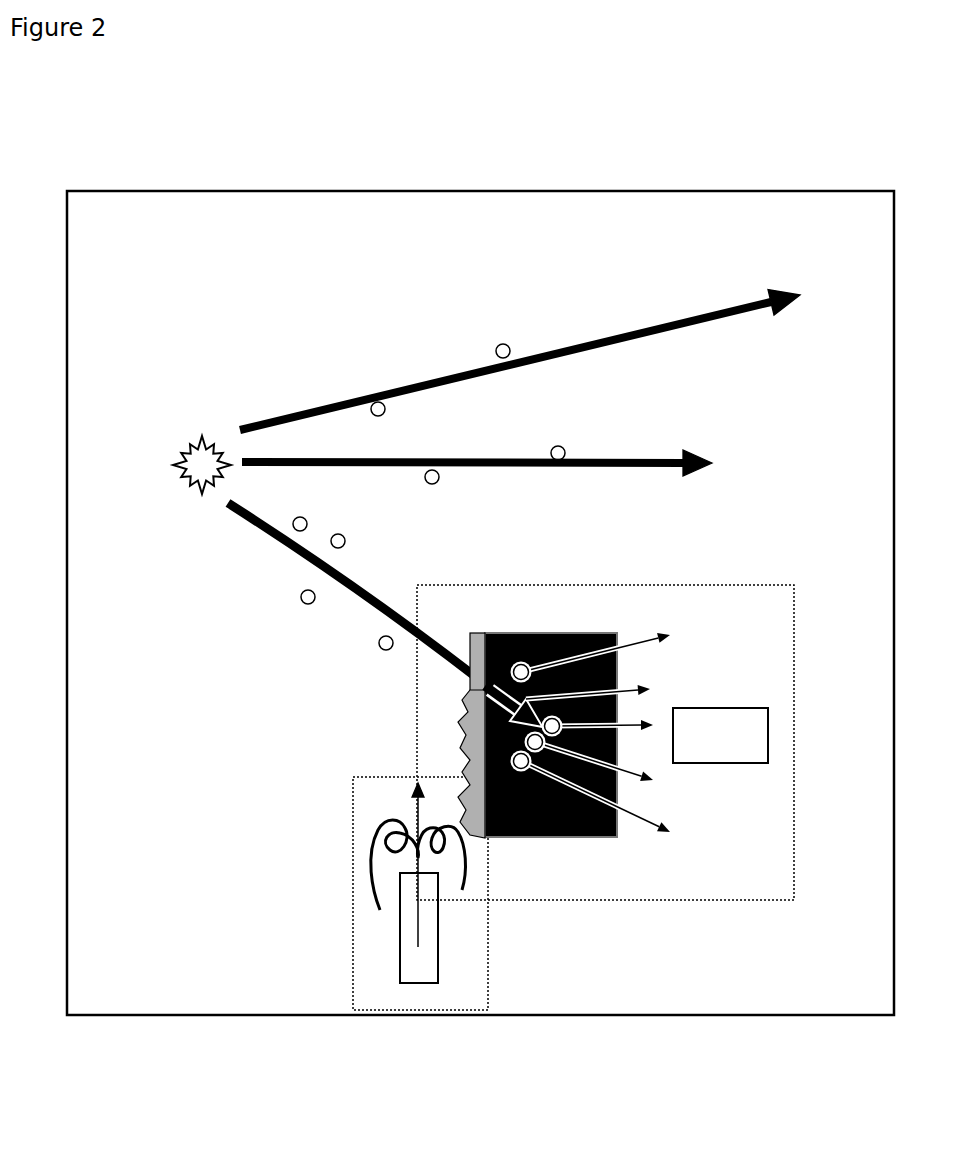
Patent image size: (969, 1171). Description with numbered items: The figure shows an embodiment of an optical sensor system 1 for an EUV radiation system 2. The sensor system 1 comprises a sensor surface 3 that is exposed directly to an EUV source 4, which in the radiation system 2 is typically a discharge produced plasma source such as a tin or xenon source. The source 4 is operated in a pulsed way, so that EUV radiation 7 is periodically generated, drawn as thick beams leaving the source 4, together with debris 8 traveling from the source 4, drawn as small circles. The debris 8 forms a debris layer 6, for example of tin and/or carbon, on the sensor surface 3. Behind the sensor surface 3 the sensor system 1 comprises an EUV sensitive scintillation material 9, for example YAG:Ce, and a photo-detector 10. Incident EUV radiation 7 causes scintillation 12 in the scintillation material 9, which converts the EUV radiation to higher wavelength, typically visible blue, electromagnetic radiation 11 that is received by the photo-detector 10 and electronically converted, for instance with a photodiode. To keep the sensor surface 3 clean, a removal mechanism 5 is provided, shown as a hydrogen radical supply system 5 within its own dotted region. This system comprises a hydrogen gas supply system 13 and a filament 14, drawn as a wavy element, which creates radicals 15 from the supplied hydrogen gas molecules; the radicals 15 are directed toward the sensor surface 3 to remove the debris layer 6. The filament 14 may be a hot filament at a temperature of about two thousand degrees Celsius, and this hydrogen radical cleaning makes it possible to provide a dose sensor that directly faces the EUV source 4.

The optical sensor system 1 is at (750, 622).
The EUV radiation system 2 is at (779, 988).
The sensor surface 3 is at (445, 718).
The EUV source 4 is at (165, 509).
The removal mechanism 5 is at (473, 1002).
The debris layer 6 is at (478, 632).
The EUV radiation 7 is at (543, 394).
The debris 8 is at (381, 403).
The EUV sensitive scintillation material 9 is at (580, 830).
The photo-detector 10 is at (743, 722).
The electromagnetic radiation 11 is at (622, 645).
The scintillation 12 is at (527, 666).
The hydrogen gas supply system 13 is at (410, 951).
The filament 14 is at (375, 828).
The radicals 15 is at (412, 803).